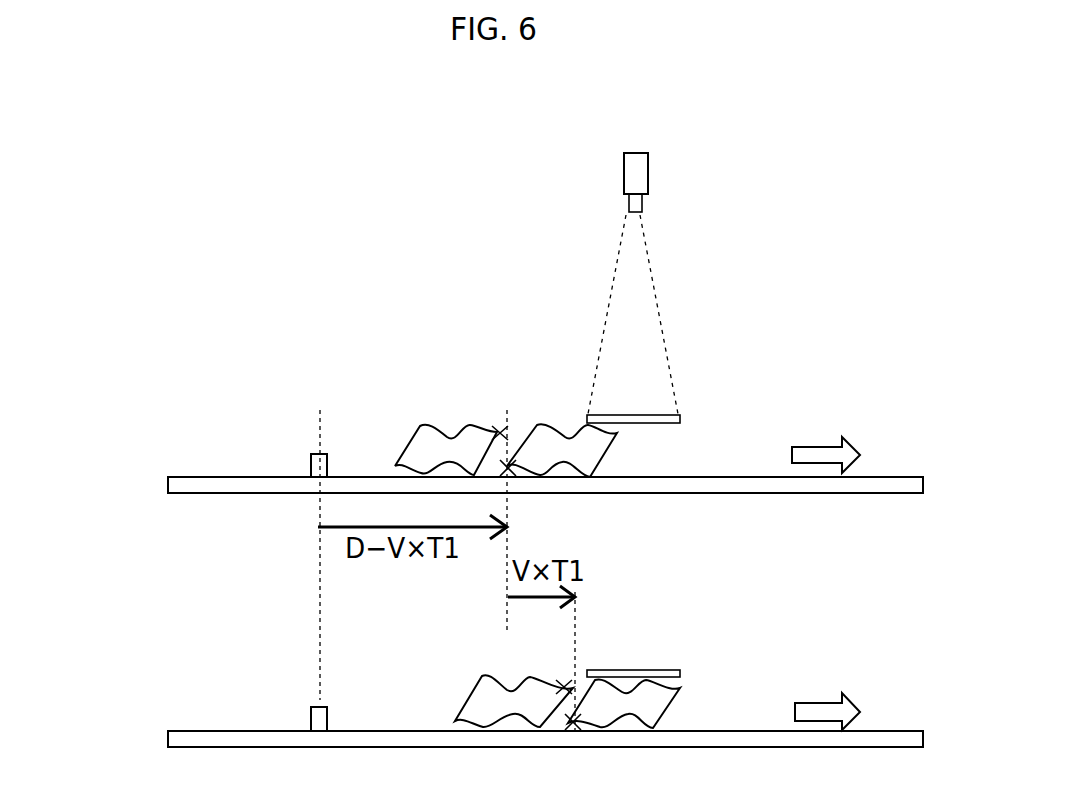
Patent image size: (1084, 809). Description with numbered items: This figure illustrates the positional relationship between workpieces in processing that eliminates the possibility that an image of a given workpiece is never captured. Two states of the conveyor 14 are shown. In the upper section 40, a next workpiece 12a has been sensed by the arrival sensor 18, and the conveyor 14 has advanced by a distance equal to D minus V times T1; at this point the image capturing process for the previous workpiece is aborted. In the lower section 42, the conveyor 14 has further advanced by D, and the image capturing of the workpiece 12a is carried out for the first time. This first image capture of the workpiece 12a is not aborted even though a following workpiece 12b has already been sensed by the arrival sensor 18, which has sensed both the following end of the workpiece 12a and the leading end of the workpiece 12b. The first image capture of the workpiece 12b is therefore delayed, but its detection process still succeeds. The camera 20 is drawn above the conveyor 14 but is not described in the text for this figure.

The workpiece 12a is at (556, 406).
The workpiece 12b is at (445, 406).
The conveyor 14 is at (890, 495).
The arrival sensor 18 is at (311, 468).
The camera / imaging device 20 is at (648, 172).
The upper section 40 is at (160, 480).
The lower section 42 is at (160, 737).